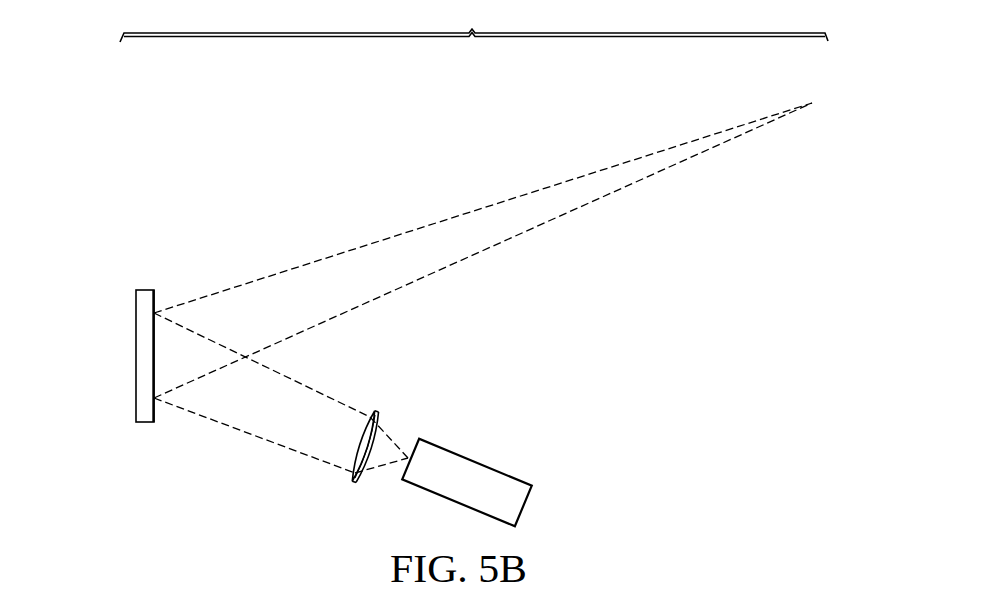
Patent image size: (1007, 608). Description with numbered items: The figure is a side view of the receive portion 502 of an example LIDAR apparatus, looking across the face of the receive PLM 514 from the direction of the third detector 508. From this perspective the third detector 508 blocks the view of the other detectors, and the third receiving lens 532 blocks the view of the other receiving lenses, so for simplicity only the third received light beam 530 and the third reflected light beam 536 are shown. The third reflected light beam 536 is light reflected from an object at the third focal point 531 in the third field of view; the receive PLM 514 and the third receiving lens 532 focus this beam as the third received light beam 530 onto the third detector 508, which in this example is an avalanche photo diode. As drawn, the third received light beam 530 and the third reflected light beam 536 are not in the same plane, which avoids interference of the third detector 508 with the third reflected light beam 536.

The receive portion 502 is at (474, 21).
The third detector 508 is at (473, 462).
The receive PLM 514 is at (136, 356).
The third received light beam 530 is at (250, 437).
The third focal point 531 is at (812, 103).
The third receiving lens 532 is at (346, 484).
The third reflected light beam 536 is at (485, 207).